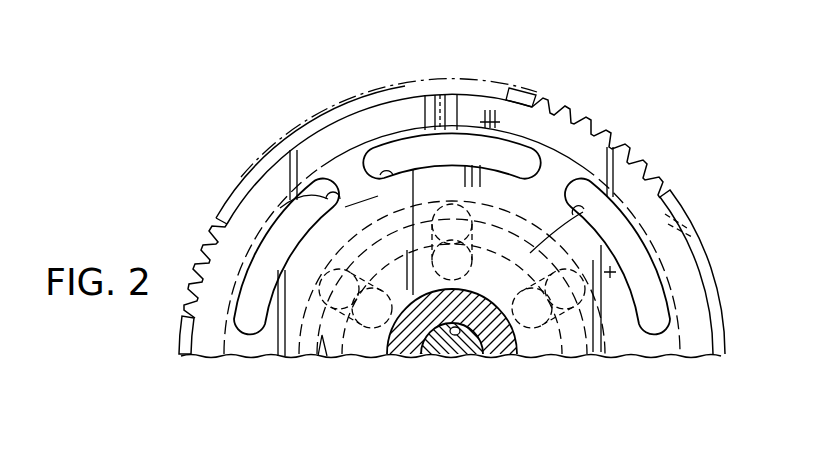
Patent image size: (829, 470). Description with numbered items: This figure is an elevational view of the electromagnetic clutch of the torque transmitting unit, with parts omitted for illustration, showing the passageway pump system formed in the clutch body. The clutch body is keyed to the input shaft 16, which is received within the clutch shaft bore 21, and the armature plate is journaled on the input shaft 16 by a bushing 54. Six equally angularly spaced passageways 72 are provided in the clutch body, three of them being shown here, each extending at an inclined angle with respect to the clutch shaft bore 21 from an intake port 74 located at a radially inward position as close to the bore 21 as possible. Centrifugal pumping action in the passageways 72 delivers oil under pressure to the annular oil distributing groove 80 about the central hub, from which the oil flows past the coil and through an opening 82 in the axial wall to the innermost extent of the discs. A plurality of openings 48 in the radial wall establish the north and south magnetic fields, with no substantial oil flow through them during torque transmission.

The input shaft 16 is at (438, 352).
The clutch shaft bore 21 is at (456, 328).
The openings 48 is at (377, 173).
The bushing 54 is at (494, 348).
The passageways 72 is at (487, 208).
The intake port 74 is at (412, 262).
The annular oil distributing groove 80 is at (334, 365).
The opening 82 is at (500, 84).